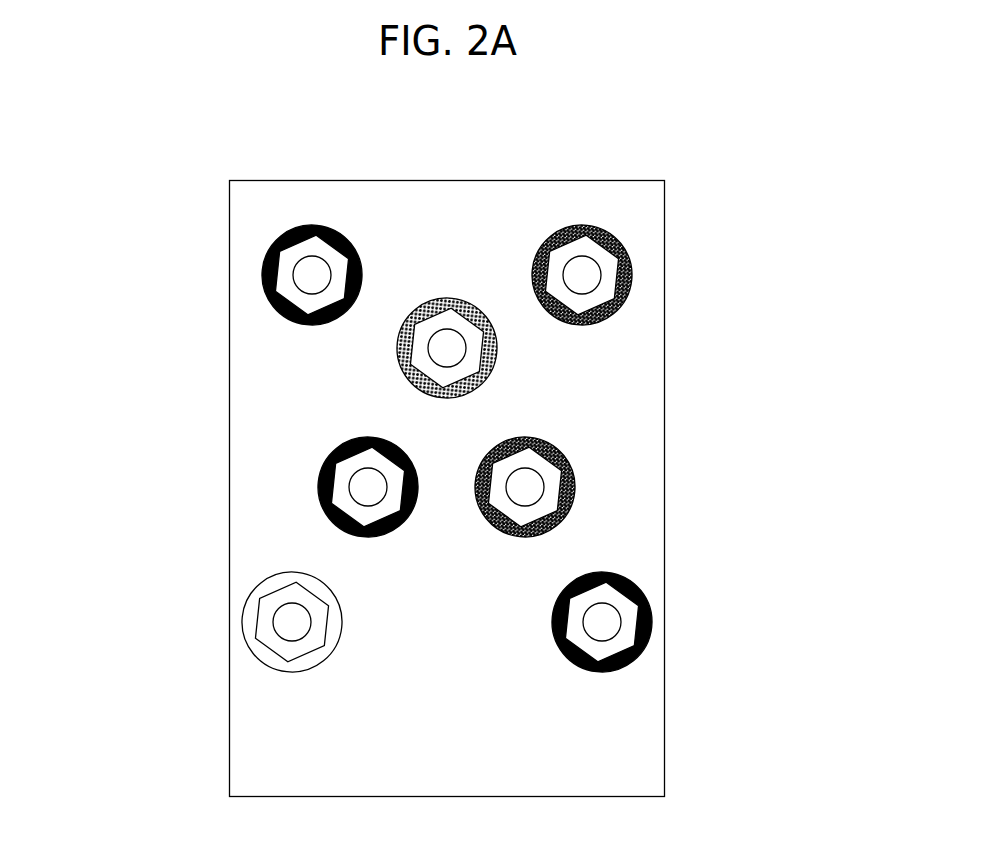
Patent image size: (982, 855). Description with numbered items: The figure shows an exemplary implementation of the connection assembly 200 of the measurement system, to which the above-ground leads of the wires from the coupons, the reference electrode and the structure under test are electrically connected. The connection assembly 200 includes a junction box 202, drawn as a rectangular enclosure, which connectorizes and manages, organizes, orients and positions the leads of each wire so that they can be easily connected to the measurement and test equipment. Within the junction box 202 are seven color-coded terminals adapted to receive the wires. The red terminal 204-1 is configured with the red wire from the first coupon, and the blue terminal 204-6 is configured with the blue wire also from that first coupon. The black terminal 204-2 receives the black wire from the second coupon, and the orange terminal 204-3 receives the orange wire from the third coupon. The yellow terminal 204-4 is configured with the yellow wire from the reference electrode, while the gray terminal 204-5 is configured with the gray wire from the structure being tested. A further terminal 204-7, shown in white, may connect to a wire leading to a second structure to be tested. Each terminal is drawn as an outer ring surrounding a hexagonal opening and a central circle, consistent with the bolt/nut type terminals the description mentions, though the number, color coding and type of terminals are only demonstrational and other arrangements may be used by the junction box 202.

The connection assembly 200 is at (778, 111).
The junction box 202 is at (575, 180).
The red terminal 204-1 is at (368, 487).
The black terminal 204-2 is at (602, 622).
The orange terminal 204-3 is at (582, 275).
The yellow terminal 204-4 is at (447, 348).
The gray terminal 204-5 is at (525, 487).
The blue terminal 204-6 is at (312, 275).
The terminal 204-7 is at (292, 622).